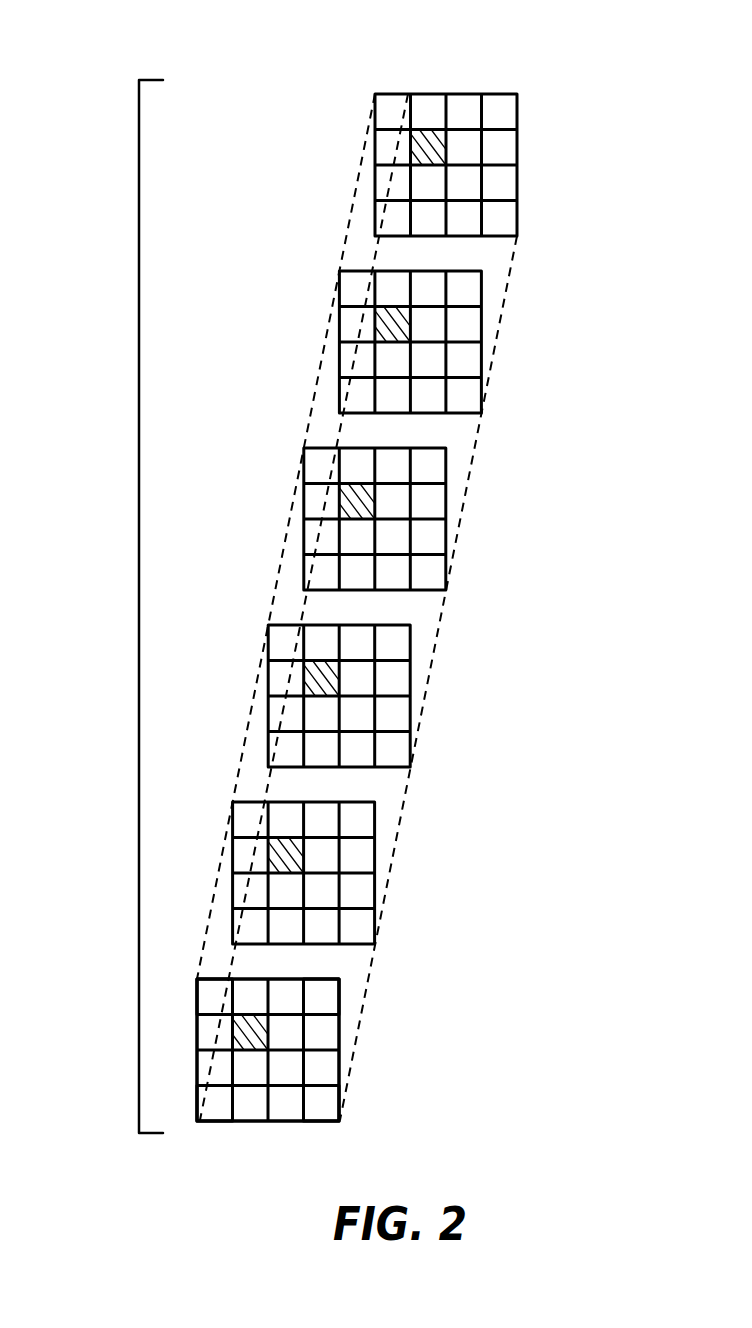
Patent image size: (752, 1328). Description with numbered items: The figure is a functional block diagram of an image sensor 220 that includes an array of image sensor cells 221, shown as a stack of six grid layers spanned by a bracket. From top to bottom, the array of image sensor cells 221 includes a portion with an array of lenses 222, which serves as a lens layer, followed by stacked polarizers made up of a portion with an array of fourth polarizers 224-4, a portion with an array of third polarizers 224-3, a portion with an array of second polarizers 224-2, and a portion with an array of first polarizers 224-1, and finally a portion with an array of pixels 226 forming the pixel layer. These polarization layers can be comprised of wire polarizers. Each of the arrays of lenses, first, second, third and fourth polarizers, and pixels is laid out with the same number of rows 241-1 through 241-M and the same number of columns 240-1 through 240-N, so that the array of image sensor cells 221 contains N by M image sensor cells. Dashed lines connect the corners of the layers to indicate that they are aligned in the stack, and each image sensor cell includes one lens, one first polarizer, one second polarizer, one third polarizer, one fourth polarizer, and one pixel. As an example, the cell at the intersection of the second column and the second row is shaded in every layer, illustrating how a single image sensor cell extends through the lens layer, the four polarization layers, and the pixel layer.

The image sensor 220 is at (122, 37).
The array of image sensor cells 221 is at (138, 233).
The array of lenses 222 is at (556, 146).
The array of fourth polarizers 224-4 is at (519, 330).
The array of third polarizers 224-3 is at (484, 507).
The array of second polarizers 224-2 is at (449, 685).
The array of first polarizers 224-1 is at (412, 858).
The array of pixels 226 is at (375, 1037).
The row 241-1 is at (186, 994).
The row 241-M is at (186, 1100).
The column 240-1 is at (217, 1132).
The column 240-N is at (320, 1132).